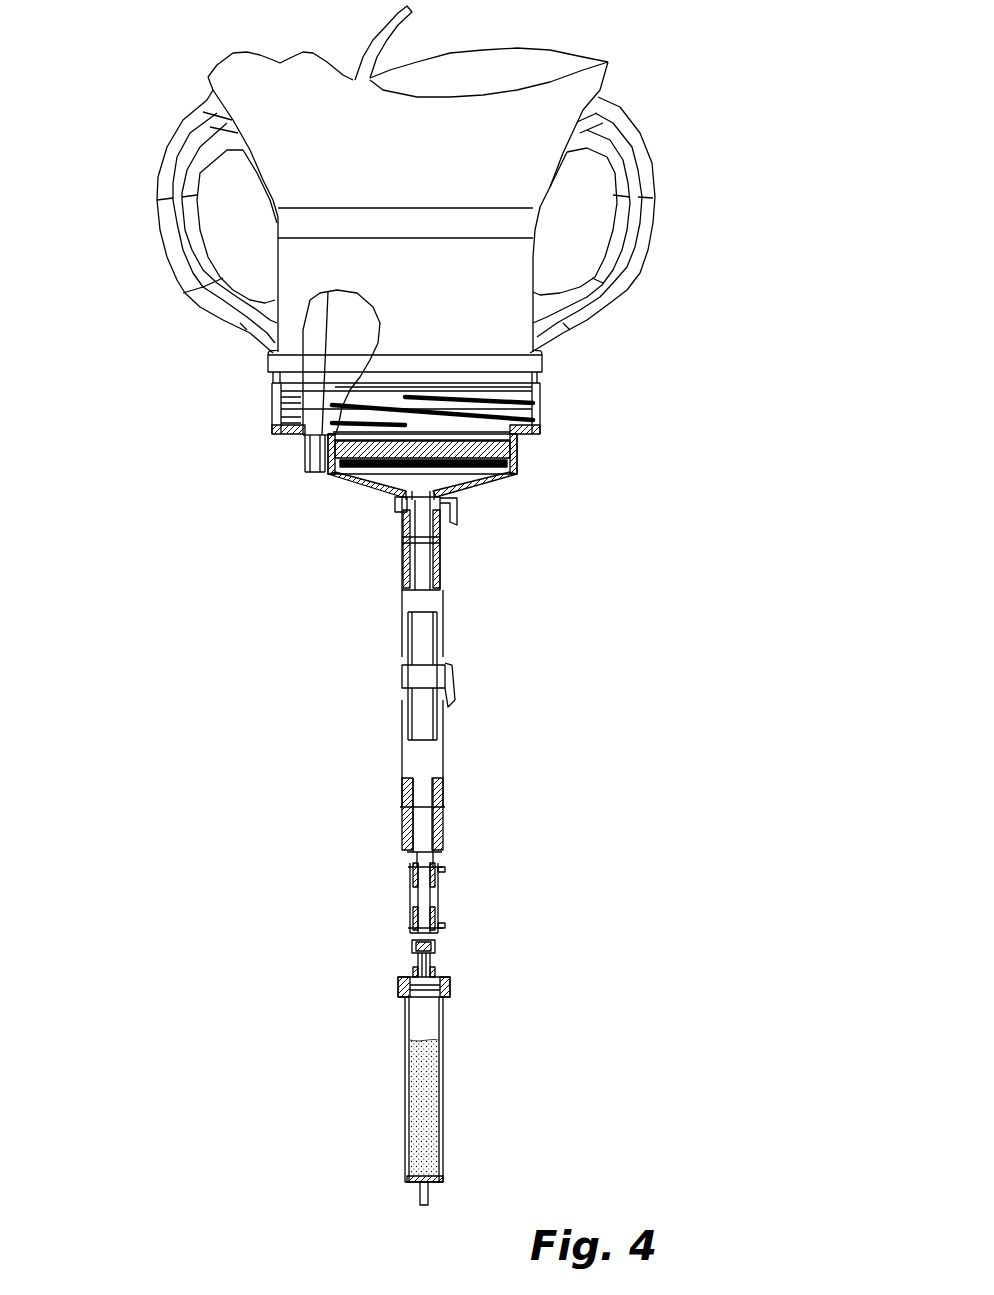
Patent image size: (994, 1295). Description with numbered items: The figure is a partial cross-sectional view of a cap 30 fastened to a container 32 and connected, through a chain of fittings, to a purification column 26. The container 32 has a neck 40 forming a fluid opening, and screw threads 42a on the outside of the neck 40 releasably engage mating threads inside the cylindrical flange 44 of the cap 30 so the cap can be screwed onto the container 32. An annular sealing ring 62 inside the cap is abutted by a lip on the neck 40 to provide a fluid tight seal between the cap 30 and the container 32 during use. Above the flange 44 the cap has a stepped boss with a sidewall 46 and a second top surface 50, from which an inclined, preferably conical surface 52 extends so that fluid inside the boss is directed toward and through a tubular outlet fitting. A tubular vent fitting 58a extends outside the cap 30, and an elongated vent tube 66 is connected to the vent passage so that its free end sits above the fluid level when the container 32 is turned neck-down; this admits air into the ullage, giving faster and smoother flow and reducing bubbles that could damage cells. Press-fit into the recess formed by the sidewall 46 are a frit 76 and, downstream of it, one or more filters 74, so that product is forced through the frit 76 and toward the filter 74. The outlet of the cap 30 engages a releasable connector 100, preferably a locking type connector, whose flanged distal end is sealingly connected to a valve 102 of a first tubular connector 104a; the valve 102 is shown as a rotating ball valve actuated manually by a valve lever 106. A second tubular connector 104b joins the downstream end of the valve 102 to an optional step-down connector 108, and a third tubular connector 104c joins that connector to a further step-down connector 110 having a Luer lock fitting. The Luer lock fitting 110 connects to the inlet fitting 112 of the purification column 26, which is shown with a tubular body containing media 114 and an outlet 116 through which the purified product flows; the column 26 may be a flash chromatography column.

The purification column 26 is at (452, 1028).
The cap 30 is at (318, 483).
The container 32 is at (607, 95).
The neck 40 is at (497, 283).
The screw threads 42a is at (497, 398).
The cylindrical flange 44 is at (538, 393).
The sidewall 46 is at (517, 470).
The second top surface 50 is at (503, 483).
The conical surface 52 is at (467, 487).
The tubular vent fitting 58a is at (305, 458).
The annular sealing ring 62 is at (525, 430).
The vent tube 66 is at (387, 25).
The filter 74 is at (383, 467).
The frit 76 is at (517, 452).
The releasable connector 100 is at (398, 513).
The valve 102 is at (405, 678).
The first tubular connector 104a is at (403, 602).
The second tubular connector 104b is at (402, 770).
The third tubular connector 104c is at (408, 898).
The valve lever 106 is at (457, 692).
The step-down connector 108 is at (408, 835).
The Luer lock fitting 110 is at (413, 945).
The inlet fitting 112 is at (430, 963).
The media 114 is at (423, 1067).
The outlet 116 is at (432, 1190).